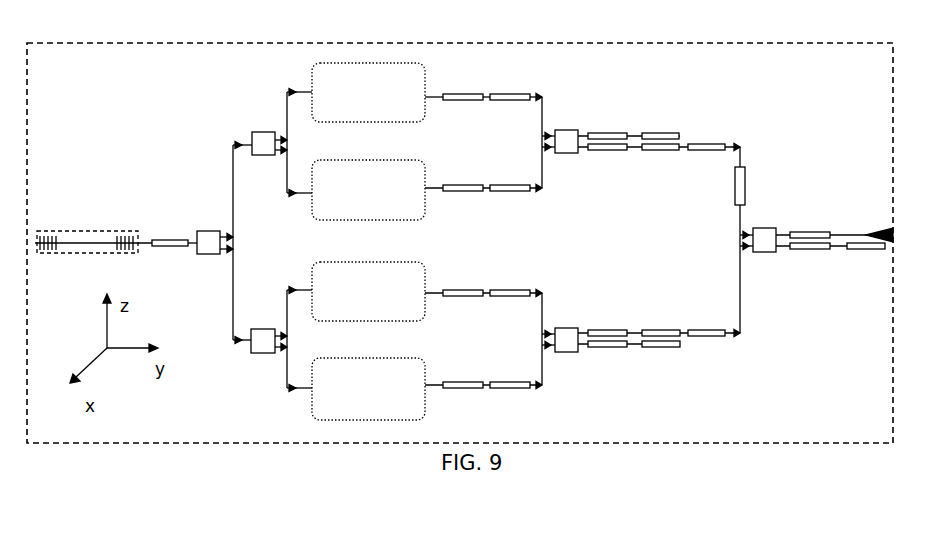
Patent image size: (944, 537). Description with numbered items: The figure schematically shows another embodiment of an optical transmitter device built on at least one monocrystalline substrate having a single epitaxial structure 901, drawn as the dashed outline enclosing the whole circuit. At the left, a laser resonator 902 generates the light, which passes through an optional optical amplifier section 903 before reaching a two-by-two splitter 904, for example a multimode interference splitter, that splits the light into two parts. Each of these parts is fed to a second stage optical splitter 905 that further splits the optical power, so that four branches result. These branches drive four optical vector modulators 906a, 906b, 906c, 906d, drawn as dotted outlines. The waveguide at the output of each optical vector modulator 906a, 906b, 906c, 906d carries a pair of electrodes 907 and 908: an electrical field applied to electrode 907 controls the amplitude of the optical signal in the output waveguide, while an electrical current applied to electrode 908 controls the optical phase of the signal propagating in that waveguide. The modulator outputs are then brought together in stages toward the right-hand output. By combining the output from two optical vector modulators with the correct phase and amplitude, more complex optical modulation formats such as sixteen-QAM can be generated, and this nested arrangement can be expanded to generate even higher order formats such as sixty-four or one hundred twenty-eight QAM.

The single epitaxial structure 901 is at (68, 43).
The laser resonator 902 is at (98, 231).
The optical amplifier section 903 is at (163, 240).
The 2×2 splitter 904 is at (205, 231).
The second stage optical splitter 905 is at (252, 133).
The optical vector modulator 906a is at (366, 122).
The optical vector modulator 906b is at (370, 214).
The optical vector modulator 906c is at (360, 321).
The optical vector modulator 906d is at (311, 396).
The electrode 907 is at (465, 100).
The electrode 908 is at (518, 94).